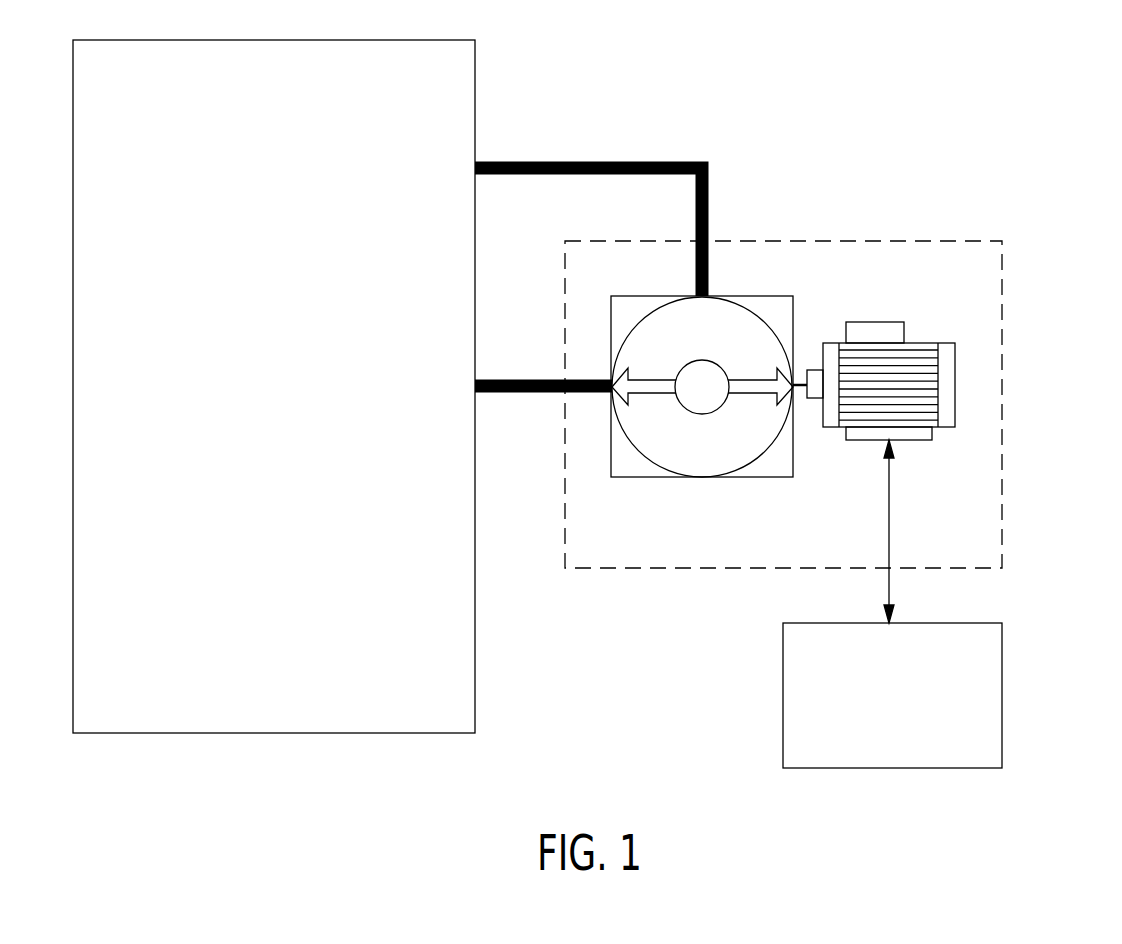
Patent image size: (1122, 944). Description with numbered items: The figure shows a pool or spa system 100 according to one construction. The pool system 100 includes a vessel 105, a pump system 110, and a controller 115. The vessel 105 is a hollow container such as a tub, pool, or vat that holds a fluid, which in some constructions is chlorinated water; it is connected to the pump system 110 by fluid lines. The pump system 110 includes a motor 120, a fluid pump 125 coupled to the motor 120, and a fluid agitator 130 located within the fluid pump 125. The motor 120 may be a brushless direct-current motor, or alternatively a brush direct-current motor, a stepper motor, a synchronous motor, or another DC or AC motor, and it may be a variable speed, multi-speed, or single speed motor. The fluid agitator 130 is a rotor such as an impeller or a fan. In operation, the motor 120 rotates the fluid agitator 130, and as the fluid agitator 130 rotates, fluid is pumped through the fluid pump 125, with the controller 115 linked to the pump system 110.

The pool or spa system 100 is at (1035, 148).
The vessel 105 is at (292, 514).
The pump system 110 is at (1002, 317).
The controller 115 is at (910, 742).
The motor 120 is at (865, 322).
The fluid pump 125 is at (613, 477).
The fluid agitator 130 is at (746, 393).